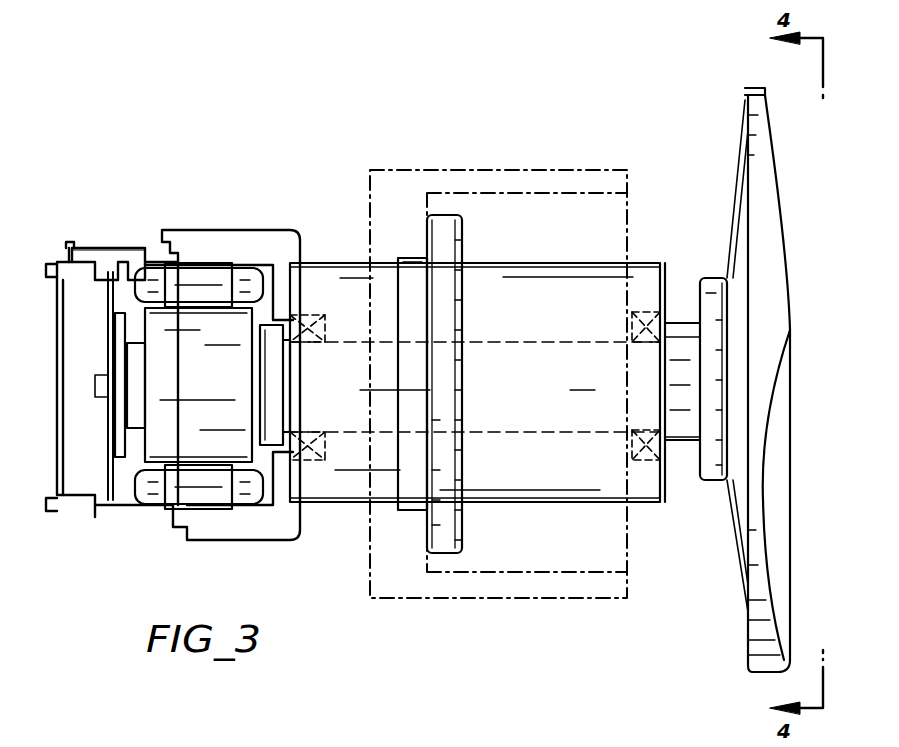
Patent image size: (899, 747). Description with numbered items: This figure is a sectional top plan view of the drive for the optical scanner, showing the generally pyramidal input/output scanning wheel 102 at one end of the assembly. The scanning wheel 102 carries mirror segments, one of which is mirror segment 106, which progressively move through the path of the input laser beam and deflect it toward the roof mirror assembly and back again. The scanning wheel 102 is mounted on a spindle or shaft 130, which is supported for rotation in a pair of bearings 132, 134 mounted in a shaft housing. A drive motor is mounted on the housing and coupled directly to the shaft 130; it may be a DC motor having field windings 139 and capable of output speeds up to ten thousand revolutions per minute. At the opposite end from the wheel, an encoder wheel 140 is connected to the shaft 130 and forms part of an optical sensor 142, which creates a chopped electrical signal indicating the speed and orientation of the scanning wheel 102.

The input/output scanning wheel 102 is at (742, 614).
The mirror segment 106 is at (778, 518).
The spindle or shaft 130 is at (520, 396).
The bearing 132 is at (310, 313).
The bearing 134 is at (647, 312).
The field windings 139 is at (203, 277).
The encoder wheel 140 is at (110, 290).
The optical sensor 142 is at (117, 246).